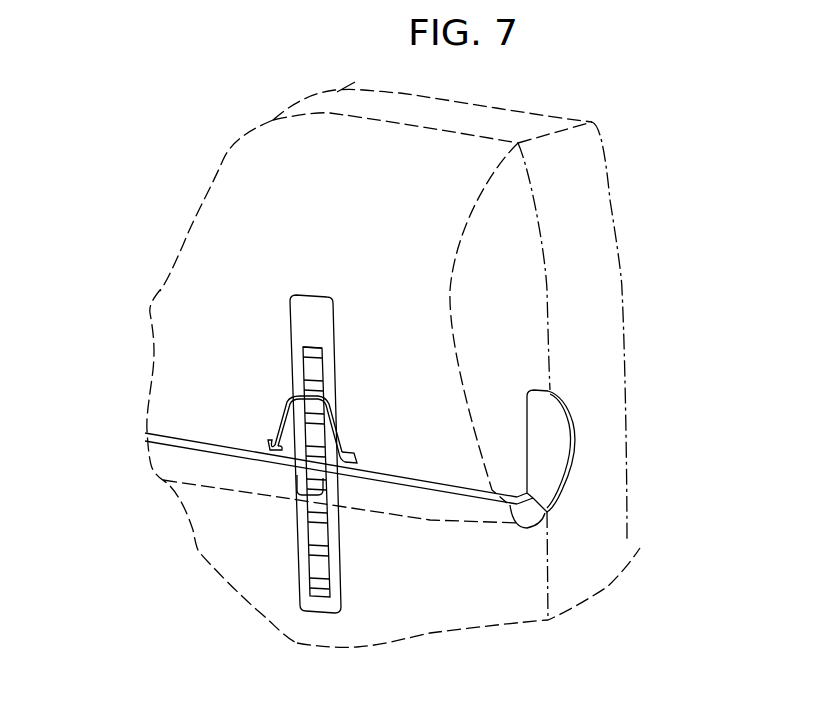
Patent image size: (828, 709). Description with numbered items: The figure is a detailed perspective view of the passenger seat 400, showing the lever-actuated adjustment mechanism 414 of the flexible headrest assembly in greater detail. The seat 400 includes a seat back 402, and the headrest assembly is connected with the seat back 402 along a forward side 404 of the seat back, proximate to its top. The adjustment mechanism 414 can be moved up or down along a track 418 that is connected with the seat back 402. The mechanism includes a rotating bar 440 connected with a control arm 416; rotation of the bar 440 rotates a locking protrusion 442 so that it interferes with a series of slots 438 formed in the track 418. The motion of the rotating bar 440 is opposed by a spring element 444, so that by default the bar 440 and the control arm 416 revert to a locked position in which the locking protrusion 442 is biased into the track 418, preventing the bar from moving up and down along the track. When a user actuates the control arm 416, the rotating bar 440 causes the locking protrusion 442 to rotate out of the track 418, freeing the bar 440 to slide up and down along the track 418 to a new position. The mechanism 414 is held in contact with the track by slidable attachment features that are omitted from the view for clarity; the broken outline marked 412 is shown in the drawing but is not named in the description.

The passenger seat 400 is at (140, 216).
The seat back 402 is at (618, 367).
The forward side 404 is at (474, 584).
The seat back frame 412 is at (173, 313).
The lever-actuated adjustment mechanism 414 is at (600, 459).
The control arm 416 is at (558, 485).
The track 418 is at (335, 568).
The series of slots 438 is at (320, 553).
The rotating bar 440 is at (215, 443).
The locking protrusion 442 is at (303, 485).
The spring element 444 is at (280, 413).